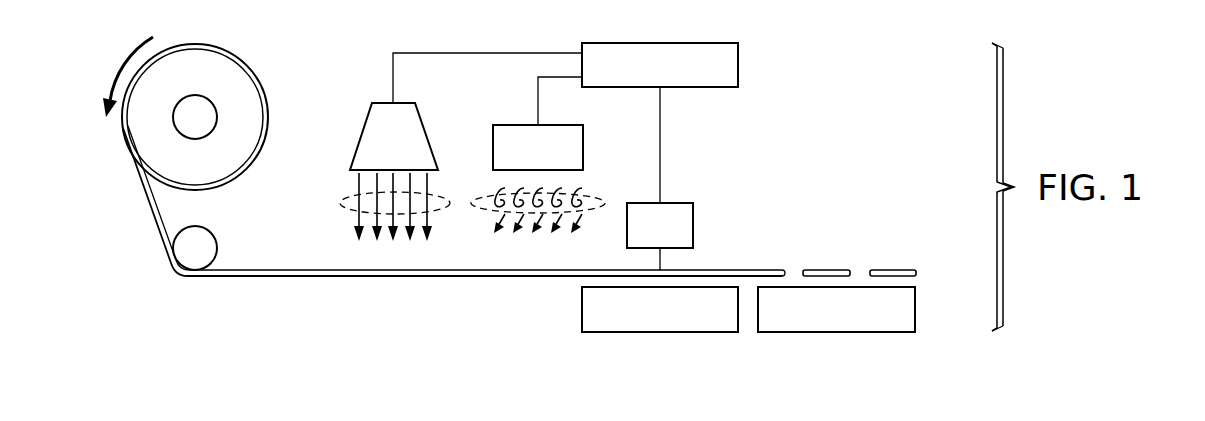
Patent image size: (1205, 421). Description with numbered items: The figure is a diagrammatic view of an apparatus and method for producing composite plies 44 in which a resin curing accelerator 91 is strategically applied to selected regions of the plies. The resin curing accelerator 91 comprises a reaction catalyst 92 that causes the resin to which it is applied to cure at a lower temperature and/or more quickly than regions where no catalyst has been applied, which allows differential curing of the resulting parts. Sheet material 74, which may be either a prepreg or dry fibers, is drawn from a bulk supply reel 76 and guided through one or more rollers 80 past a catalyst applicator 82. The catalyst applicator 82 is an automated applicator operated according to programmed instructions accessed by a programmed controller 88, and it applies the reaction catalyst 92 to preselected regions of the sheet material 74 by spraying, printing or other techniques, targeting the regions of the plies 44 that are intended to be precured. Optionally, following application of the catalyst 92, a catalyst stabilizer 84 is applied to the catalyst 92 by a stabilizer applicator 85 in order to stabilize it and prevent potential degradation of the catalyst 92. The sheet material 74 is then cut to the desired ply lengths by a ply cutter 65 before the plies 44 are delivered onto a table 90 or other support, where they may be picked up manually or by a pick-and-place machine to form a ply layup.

The plies 44 is at (828, 268).
The ply cutter 65 is at (694, 228).
The sheet material 74 is at (152, 200).
The bulk supply reel 76 is at (247, 88).
The rollers 80 is at (208, 246).
The catalyst applicator 82 is at (358, 141).
The catalyst stabilizer 84 is at (601, 203).
The stabilizer applicator 85 is at (516, 124).
The programmed controller 88 is at (740, 64).
The table 90 is at (916, 305).
The resin curing accelerator 91 is at (451, 172).
The reaction catalyst 92 is at (340, 204).